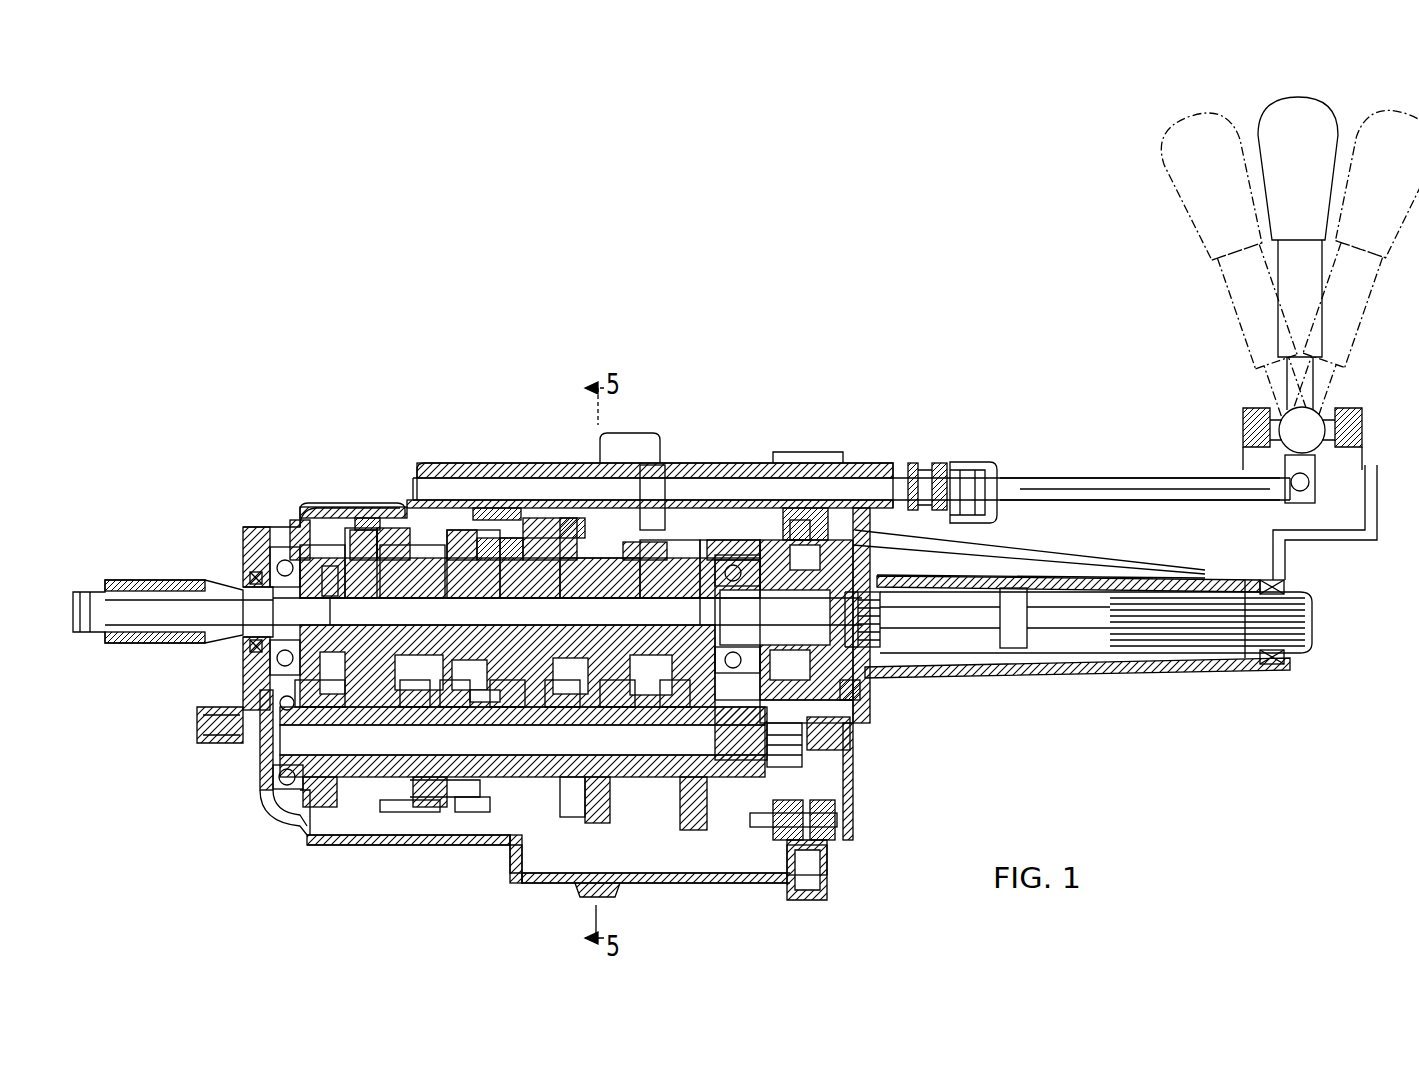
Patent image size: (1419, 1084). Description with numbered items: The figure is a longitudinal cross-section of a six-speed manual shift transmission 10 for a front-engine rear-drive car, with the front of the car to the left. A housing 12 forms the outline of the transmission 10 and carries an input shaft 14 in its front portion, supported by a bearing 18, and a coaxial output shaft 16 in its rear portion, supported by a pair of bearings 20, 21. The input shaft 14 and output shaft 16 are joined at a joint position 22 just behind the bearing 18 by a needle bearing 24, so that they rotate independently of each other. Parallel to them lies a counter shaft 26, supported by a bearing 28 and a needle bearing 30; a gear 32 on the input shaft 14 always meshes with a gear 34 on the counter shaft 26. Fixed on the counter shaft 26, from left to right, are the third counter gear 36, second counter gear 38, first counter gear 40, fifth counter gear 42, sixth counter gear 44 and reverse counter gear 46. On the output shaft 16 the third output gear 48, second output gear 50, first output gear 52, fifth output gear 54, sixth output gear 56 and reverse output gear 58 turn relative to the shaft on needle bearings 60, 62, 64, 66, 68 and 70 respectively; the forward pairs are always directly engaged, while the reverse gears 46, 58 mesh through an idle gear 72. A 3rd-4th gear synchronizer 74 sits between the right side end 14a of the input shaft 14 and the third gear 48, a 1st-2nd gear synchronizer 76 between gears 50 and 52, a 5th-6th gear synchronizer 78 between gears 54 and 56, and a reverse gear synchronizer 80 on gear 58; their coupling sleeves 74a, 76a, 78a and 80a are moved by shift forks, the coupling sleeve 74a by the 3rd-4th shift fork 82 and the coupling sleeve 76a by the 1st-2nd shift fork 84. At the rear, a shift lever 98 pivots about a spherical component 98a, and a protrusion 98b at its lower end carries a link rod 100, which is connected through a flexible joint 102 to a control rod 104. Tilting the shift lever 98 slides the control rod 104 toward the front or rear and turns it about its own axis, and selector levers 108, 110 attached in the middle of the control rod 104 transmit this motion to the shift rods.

The manual shift transmission 10 is at (718, 412).
The housing 12 is at (607, 446).
The input shaft 14 is at (148, 598).
The right side end of the input shaft 14a is at (345, 560).
The output shaft 16 is at (965, 630).
The bearing 18 is at (275, 562).
The bearing 20 is at (728, 590).
The bearing 21 is at (880, 612).
The joint position 22 is at (300, 510).
The needle bearing 24 is at (330, 580).
The counter shaft 26 is at (500, 778).
The bearing 28 is at (270, 783).
The needle bearing 30 is at (850, 745).
The gear 32 is at (275, 655).
The gear 34 is at (300, 840).
The third counter gear 36 is at (410, 812).
The second counter gear 38 is at (468, 812).
The first counter gear 40 is at (556, 780).
The fifth counter gear 42 is at (600, 828).
The sixth counter gear 44 is at (695, 820).
The reverse counter gear 46 is at (820, 800).
The third output gear 48 is at (412, 554).
The second output gear 50 is at (455, 695).
The first output gear 52 is at (565, 520).
The fifth output gear 54 is at (600, 564).
The sixth output gear 56 is at (685, 570).
The reverse output gear 58 is at (793, 530).
The needle bearing 60 is at (418, 695).
The needle bearing 62 is at (360, 560).
The needle bearing 64 is at (465, 565).
The needle bearing 66 is at (520, 560).
The needle bearing 68 is at (718, 732).
The needle bearing 70 is at (797, 582).
The idle gear 72 is at (795, 885).
The 3rd-4th gear synchronizer 74 is at (374, 760).
The coupling sleeve 74a is at (318, 690).
The 1st-2nd gear synchronizer 76 is at (560, 695).
The coupling sleeve 76a is at (505, 695).
The 5th-6th gear synchronizer 78 is at (673, 695).
The coupling sleeve 78a is at (615, 695).
The reverse gear synchronizer 80 is at (835, 700).
The coupling sleeve 80a is at (860, 692).
The 3rd-4th shift fork 82 is at (375, 528).
The 1st-2nd shift fork 84 is at (492, 508).
The shift lever 98 is at (1280, 162).
The spherical component 98a is at (1292, 440).
The protrusion 98b is at (1298, 478).
The link rod 100 is at (1115, 480).
The flexible joint 102 is at (985, 455).
The control rod 104 is at (770, 490).
The selector lever 108 is at (655, 500).
The selector lever 110 is at (830, 510).